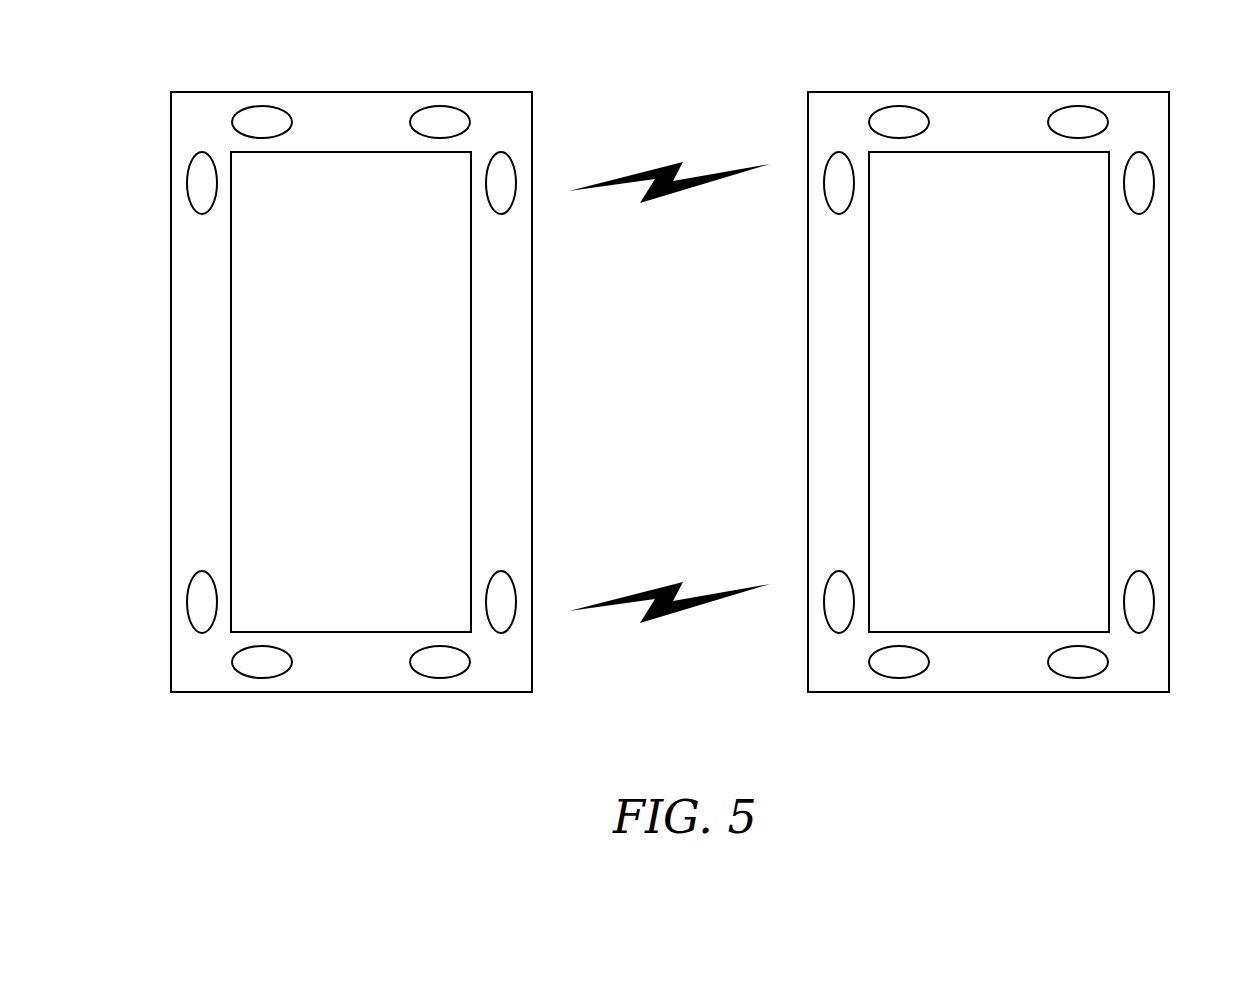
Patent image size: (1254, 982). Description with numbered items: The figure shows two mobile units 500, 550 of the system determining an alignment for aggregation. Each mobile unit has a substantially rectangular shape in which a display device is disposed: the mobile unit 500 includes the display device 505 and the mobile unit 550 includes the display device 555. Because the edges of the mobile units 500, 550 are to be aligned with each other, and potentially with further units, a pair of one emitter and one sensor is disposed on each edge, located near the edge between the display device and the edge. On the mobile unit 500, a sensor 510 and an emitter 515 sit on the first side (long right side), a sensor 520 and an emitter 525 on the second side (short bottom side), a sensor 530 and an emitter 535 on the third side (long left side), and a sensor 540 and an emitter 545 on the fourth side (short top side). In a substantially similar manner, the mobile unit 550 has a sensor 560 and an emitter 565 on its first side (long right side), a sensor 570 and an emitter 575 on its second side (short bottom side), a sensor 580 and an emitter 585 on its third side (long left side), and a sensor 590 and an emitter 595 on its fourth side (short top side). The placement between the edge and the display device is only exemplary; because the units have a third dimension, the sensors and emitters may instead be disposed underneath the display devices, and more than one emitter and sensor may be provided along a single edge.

The mobile unit 500 is at (200, 92).
The display device 505 is at (350, 152).
The sensor 510 is at (516, 192).
The emitter 515 is at (501, 571).
The sensor 520 is at (440, 678).
The emitter 525 is at (262, 678).
The sensor 530 is at (187, 602).
The emitter 535 is at (187, 178).
The sensor 540 is at (262, 106).
The emitter 545 is at (441, 106).
The mobile unit 550 is at (838, 92).
The display device 555 is at (988, 152).
The sensor 560 is at (1154, 182).
The emitter 565 is at (1154, 602).
The sensor 570 is at (1078, 678).
The emitter 575 is at (899, 678).
The sensor 580 is at (840, 571).
The emitter 585 is at (824, 193).
The sensor 590 is at (899, 106).
The emitter 595 is at (1078, 106).